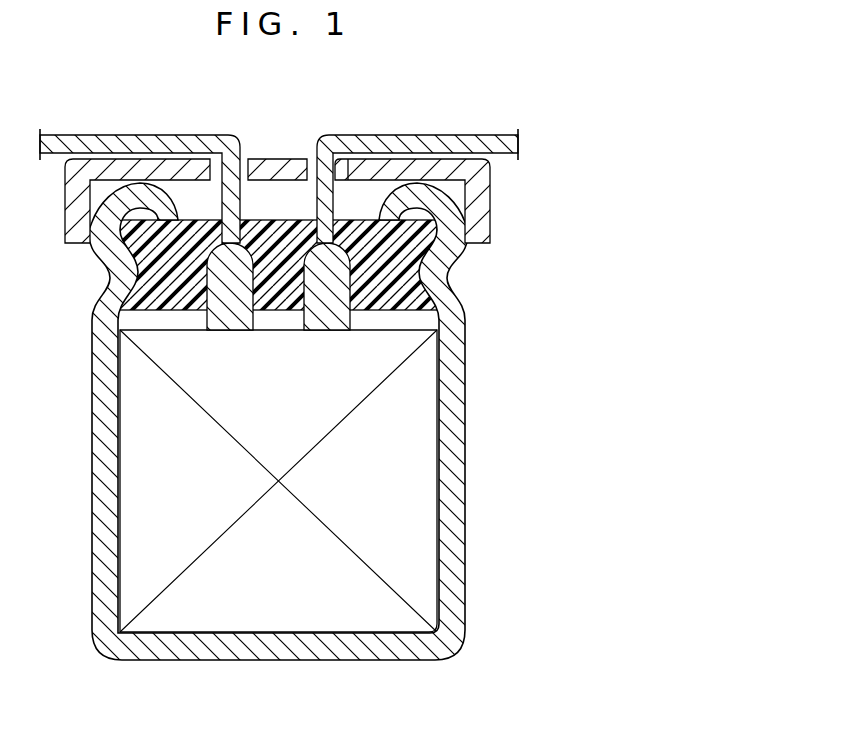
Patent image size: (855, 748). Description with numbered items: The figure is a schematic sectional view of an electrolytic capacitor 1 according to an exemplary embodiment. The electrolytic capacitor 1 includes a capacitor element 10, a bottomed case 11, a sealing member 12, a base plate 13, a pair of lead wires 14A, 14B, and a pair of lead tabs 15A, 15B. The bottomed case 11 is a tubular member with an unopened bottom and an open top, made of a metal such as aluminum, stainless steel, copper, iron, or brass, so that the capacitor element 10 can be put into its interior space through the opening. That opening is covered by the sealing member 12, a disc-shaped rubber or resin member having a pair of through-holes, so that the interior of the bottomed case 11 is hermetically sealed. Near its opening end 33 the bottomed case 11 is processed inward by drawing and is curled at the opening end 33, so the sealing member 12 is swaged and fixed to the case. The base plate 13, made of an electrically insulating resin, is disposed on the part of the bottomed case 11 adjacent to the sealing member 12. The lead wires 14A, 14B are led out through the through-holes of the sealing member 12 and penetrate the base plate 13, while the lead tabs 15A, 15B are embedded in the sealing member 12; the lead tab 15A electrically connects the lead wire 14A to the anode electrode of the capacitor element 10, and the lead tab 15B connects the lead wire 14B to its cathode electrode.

The electrolytic capacitor 1 is at (497, 99).
The capacitor element 10 is at (418, 486).
The bottomed case 11 is at (303, 379).
The sealing member 12 is at (410, 270).
The base plate 13 is at (482, 205).
The lead wire 14A is at (143, 142).
The lead wire 14B is at (425, 142).
The lead tab 15A is at (231, 321).
The lead tab 15B is at (326, 321).
The opening end 33 is at (170, 212).